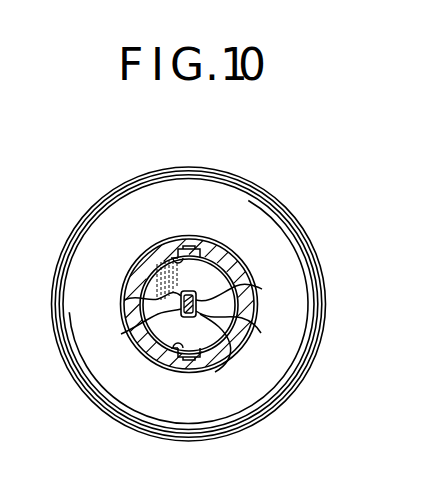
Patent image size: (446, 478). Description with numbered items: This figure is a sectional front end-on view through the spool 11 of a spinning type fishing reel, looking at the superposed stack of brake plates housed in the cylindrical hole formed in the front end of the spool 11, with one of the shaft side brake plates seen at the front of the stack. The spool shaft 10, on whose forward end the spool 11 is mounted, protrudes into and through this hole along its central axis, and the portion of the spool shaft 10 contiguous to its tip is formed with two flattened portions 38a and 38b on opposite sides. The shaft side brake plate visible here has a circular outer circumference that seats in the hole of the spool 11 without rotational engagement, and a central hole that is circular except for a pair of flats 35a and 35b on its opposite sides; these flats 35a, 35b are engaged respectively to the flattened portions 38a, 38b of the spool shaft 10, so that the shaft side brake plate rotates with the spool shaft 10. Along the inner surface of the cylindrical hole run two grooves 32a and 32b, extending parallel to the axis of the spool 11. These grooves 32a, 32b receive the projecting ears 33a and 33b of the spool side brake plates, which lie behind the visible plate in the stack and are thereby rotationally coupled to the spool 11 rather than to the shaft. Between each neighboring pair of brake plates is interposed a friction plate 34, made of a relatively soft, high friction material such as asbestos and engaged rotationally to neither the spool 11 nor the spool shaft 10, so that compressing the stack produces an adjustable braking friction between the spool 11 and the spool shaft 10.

The spool shaft 10 is at (189, 292).
The spool 11 is at (240, 263).
The groove 32a is at (183, 250).
The groove 32b is at (183, 360).
The projecting ear 33a is at (191, 246).
The projecting ear 33b is at (200, 360).
The friction plate 34 is at (213, 335).
The flat 35a is at (124, 301).
The flat 35b is at (252, 331).
The flattened portion 38a is at (121, 334).
The flattened portion 38b is at (252, 294).